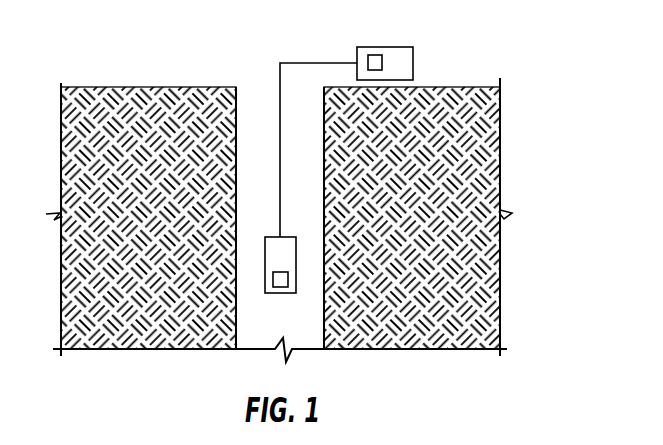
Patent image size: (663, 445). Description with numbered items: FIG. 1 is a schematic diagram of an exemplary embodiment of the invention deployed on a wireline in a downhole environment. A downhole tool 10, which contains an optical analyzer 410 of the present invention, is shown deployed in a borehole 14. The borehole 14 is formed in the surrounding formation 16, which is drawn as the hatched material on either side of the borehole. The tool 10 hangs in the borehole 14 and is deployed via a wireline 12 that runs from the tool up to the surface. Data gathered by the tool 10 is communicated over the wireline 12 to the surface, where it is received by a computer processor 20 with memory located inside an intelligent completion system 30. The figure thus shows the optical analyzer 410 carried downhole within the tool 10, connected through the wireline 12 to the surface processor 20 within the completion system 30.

The downhole tool 10 is at (272, 237).
The wireline 12 is at (280, 77).
The borehole 14 is at (324, 221).
The formation 16 is at (500, 142).
The computer processor 20 is at (375, 55).
The intelligent completion system 30 is at (413, 63).
The optical analyzer 410 is at (276, 287).